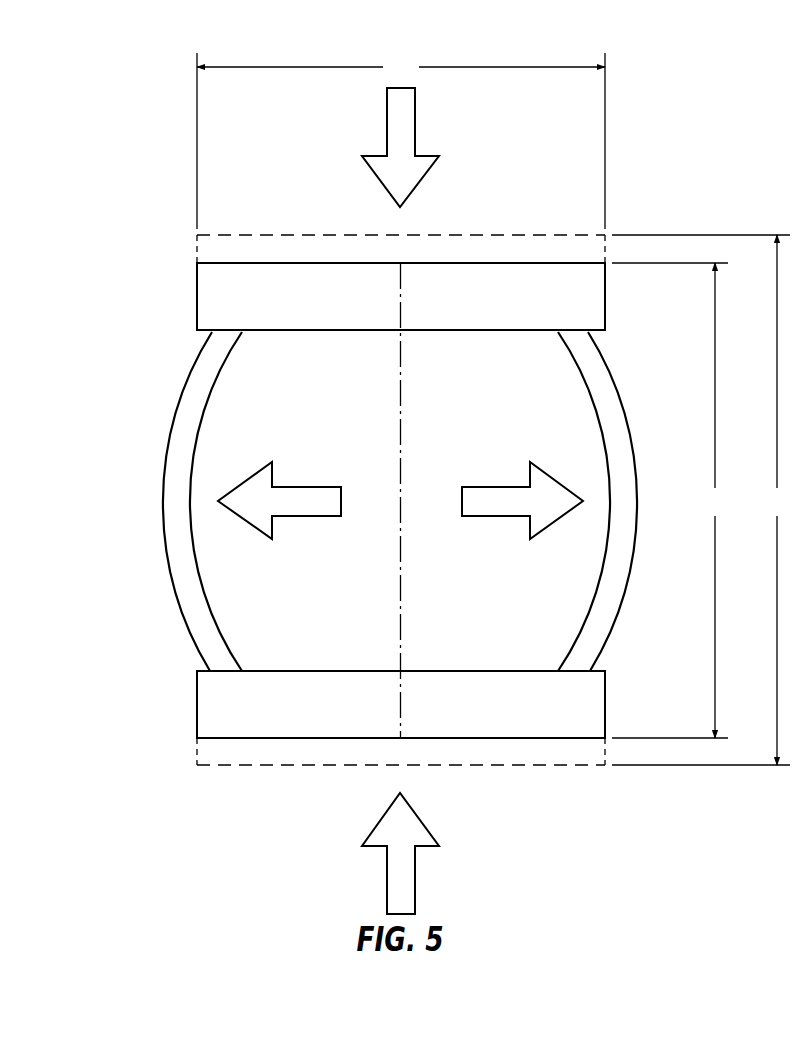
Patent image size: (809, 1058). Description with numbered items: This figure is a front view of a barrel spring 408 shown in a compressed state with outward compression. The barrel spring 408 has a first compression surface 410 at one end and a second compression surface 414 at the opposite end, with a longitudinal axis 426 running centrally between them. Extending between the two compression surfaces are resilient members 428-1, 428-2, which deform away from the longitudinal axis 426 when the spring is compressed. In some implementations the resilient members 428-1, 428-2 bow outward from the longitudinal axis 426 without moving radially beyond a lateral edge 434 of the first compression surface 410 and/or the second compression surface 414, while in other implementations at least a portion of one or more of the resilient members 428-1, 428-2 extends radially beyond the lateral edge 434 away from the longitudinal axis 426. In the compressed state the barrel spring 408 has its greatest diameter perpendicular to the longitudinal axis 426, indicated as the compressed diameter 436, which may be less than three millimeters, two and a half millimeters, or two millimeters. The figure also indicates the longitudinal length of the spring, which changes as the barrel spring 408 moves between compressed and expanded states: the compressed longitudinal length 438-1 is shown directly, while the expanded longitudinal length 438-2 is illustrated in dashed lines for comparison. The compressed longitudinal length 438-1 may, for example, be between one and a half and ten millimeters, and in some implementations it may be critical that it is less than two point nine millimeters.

The barrel spring 408 is at (447, 438).
The first compression surface 410 is at (545, 278).
The second compression surface 414 is at (545, 724).
The longitudinal axis 426 is at (402, 277).
The resilient member 428-1 is at (607, 603).
The resilient member 428-2 is at (195, 604).
The lateral edge 434 is at (197, 705).
The compressed diameter 436 is at (401, 68).
The compressed longitudinal length 438-1 is at (715, 500).
The expanded longitudinal length 438-2 is at (777, 500).